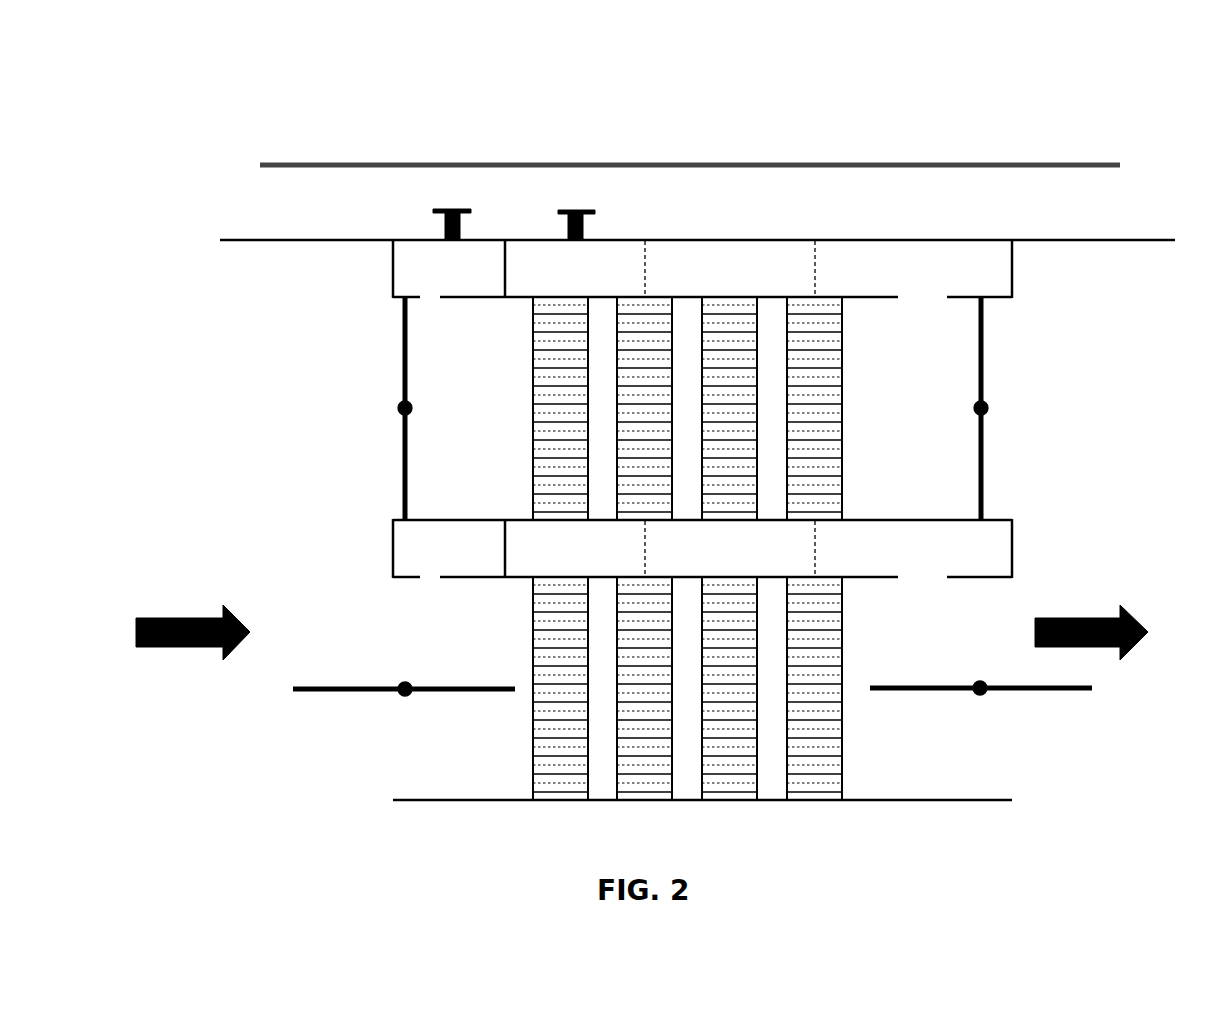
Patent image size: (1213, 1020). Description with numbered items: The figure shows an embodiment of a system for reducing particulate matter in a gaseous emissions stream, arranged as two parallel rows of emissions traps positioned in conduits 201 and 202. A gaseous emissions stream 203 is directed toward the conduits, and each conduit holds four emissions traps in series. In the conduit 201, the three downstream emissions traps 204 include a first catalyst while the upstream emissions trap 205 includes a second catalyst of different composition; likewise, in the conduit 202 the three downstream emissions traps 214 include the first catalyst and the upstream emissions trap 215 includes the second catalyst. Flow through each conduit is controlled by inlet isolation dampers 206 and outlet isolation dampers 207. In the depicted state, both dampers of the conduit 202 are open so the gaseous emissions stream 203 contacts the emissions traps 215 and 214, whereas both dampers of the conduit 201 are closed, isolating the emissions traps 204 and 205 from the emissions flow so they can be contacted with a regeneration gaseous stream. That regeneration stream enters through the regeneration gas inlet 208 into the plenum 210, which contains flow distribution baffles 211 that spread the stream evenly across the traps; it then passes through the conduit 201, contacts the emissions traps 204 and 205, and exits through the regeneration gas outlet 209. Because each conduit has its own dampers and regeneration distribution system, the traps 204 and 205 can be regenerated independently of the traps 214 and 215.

The conduit 201 is at (450, 468).
The conduit 202 is at (450, 738).
The gaseous emissions stream 203 is at (171, 603).
The downstream emissions traps 204 is at (820, 410).
The upstream emissions trap 205 is at (567, 354).
The inlet isolation dampers 206 is at (402, 374).
The outlet isolation dampers 207 is at (982, 373).
The regeneration gas inlet 208 is at (578, 208).
The regeneration gas outlet 209 is at (452, 210).
The plenum 210 is at (702, 268).
The flow distribution baffles 211 is at (812, 270).
The downstream emissions traps 214 is at (813, 667).
The upstream emissions trap 215 is at (565, 626).